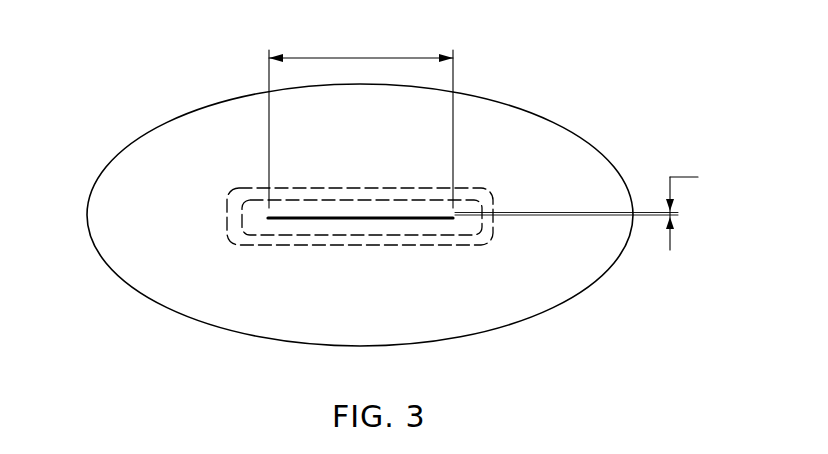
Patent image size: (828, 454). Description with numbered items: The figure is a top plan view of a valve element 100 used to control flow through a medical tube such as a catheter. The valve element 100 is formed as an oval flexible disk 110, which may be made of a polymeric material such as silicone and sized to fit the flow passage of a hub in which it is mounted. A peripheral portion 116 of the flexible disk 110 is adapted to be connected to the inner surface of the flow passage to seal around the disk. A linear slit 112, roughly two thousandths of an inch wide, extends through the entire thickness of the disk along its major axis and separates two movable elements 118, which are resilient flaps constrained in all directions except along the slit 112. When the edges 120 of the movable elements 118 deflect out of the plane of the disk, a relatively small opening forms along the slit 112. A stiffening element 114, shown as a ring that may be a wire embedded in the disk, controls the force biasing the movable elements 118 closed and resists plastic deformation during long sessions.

The valve element 100 is at (158, 73).
The flexible disk 110 is at (215, 303).
The slit 112 is at (425, 212).
The stiffening element 114 is at (450, 245).
The peripheral portion 116 is at (132, 145).
The movable elements 118 is at (332, 205).
The edges 120 is at (280, 218).